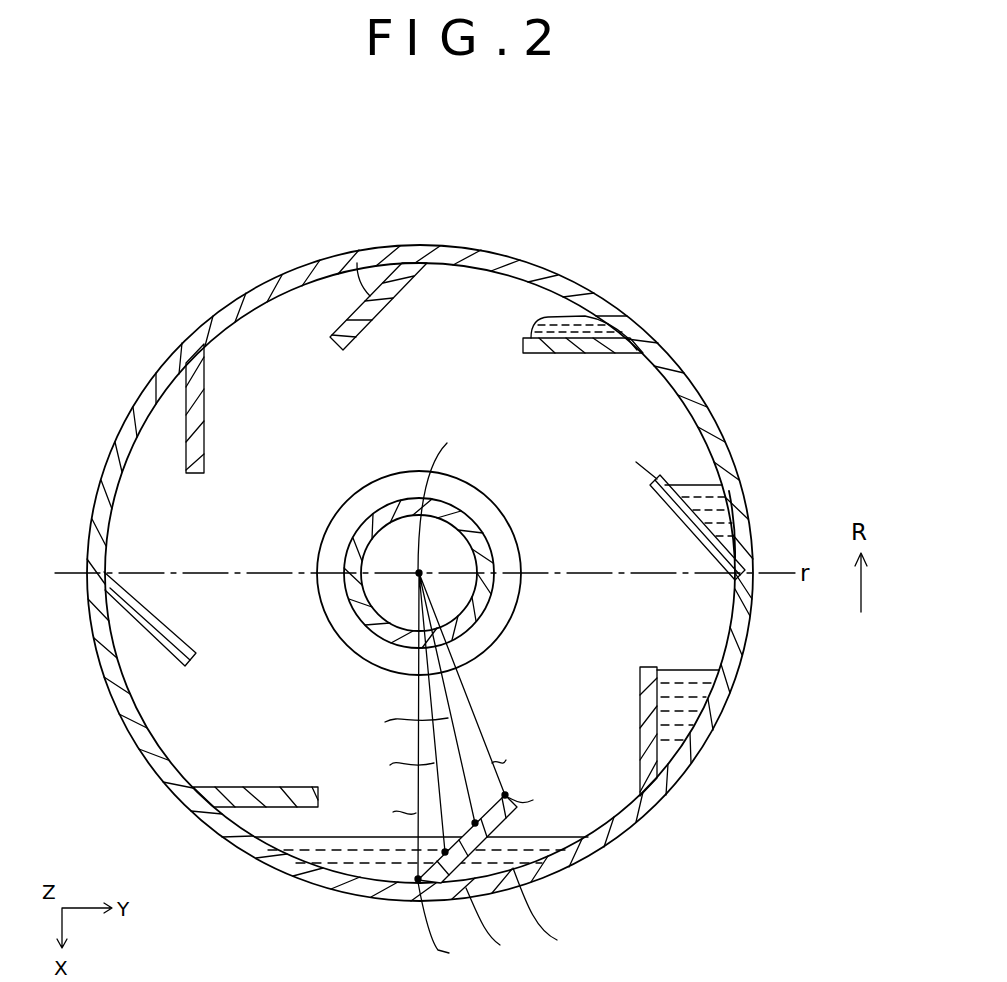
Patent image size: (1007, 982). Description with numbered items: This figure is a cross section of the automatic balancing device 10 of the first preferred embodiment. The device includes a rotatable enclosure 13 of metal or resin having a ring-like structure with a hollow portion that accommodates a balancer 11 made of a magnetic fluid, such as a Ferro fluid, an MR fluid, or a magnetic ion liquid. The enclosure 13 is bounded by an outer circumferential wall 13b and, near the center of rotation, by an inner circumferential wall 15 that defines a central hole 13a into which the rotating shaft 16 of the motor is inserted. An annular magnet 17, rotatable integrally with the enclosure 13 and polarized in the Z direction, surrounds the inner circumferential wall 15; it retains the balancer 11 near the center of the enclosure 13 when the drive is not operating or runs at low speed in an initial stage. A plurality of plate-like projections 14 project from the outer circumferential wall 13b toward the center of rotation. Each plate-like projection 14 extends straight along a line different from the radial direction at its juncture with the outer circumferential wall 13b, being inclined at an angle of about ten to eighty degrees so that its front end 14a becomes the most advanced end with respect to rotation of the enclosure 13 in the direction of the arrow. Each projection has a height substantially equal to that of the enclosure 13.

The automatic balancing device 10 is at (427, 231).
The balancer 11 is at (383, 866).
The enclosure 13 is at (580, 285).
The central hole 13a is at (452, 612).
The outer circumferential wall 13b is at (738, 507).
The plate-like projection 14 is at (742, 488).
The front end 14a is at (668, 480).
The inner circumferential wall 15 is at (648, 797).
The rotating shaft 16 is at (390, 551).
The magnet 17 is at (487, 512).